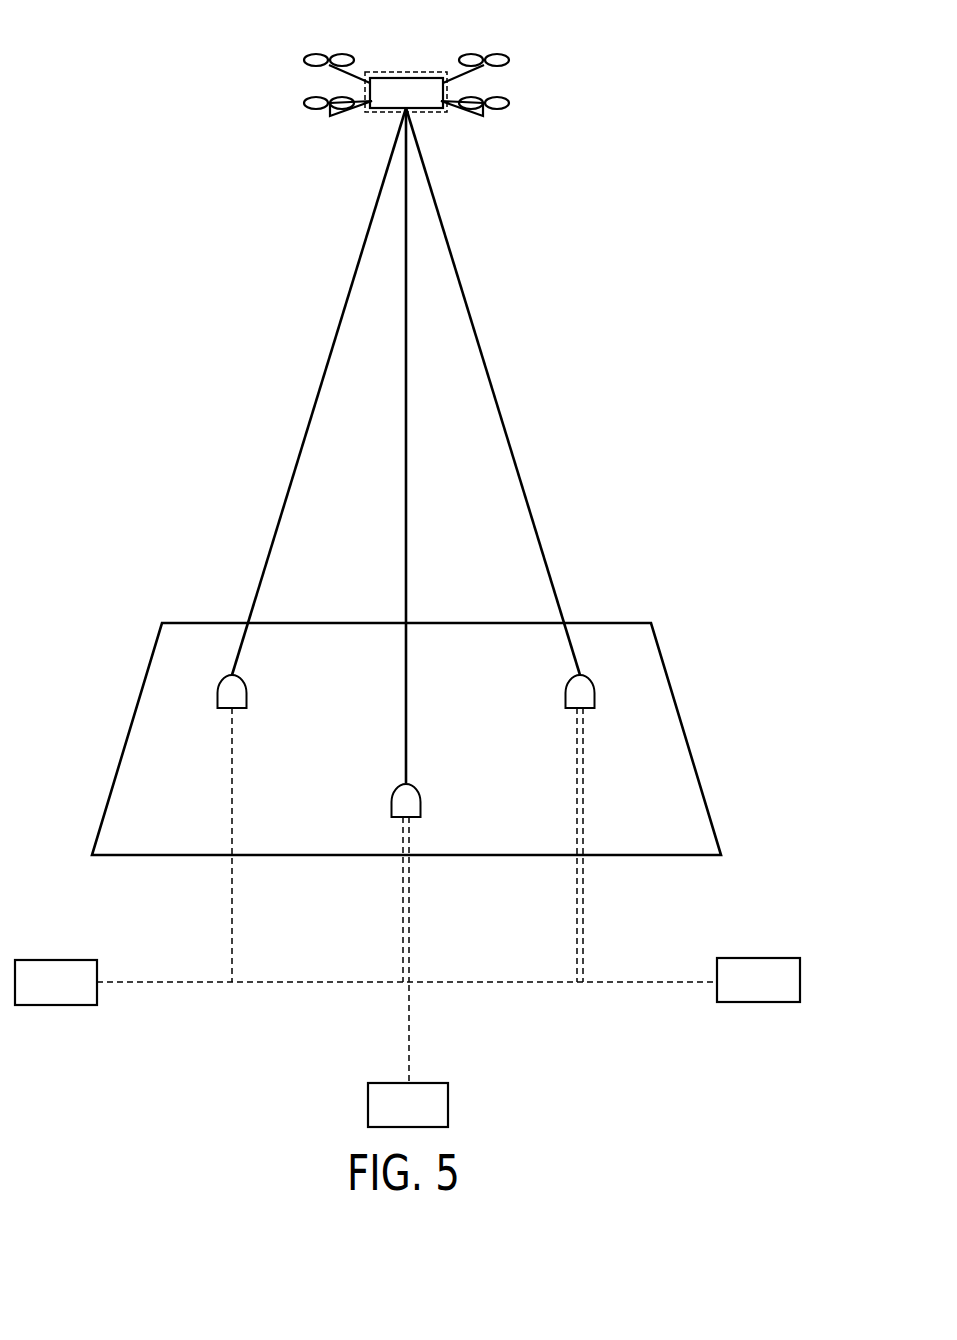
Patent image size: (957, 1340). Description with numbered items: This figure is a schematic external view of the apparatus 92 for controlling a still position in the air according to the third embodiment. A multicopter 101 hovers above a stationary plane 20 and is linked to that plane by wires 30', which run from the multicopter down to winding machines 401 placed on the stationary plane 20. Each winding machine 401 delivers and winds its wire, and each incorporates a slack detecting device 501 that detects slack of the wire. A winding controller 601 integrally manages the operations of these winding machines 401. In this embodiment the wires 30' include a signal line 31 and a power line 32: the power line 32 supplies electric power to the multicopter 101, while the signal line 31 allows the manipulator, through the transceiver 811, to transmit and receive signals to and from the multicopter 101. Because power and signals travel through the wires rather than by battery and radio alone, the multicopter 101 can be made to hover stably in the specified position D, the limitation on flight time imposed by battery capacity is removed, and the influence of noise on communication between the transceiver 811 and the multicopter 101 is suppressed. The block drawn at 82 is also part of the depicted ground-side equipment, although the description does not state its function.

The apparatus for controlling a still position in the air 92 is at (100, 27).
The specified position D is at (373, 113).
The multicopter 101 is at (410, 92).
The signal line 31 is at (483, 357).
The power line 32 is at (406, 483).
The wires 30' is at (346, 391).
The stationary plane 20 is at (608, 639).
The winding machines 401 is at (320, 650).
The slack detecting device 501 is at (572, 678).
The winding controller 601 is at (55, 980).
The transceiver 811 is at (768, 970).
The display terminal 82 is at (432, 1105).